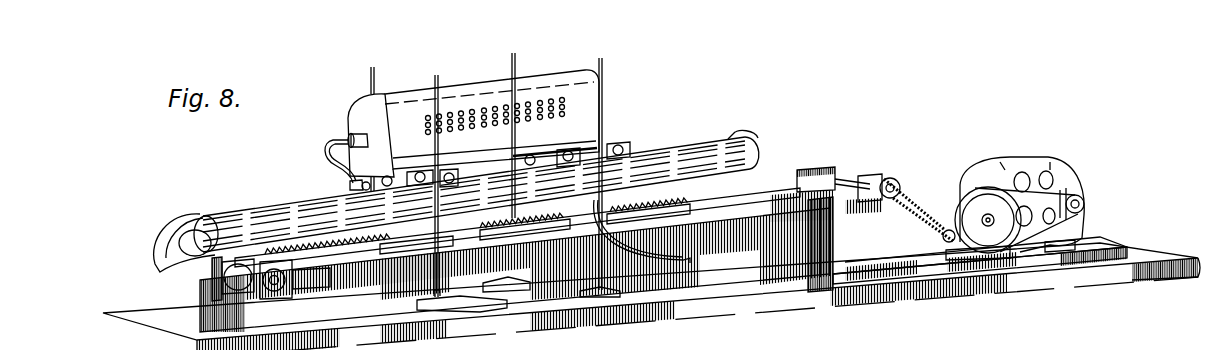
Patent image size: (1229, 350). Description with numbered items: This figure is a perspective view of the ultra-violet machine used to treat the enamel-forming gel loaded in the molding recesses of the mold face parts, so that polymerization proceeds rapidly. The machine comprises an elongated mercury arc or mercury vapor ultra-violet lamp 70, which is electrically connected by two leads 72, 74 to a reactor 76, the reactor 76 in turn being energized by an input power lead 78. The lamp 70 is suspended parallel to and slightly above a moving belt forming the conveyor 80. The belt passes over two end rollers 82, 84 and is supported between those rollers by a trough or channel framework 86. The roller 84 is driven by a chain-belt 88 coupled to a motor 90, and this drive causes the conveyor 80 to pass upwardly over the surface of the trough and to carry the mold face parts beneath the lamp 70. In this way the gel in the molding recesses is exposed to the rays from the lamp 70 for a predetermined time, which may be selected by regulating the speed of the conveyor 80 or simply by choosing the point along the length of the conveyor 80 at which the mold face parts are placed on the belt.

The ultra-violet lamp 70 is at (190, 238).
The lead 72 is at (350, 186).
The lead 74 is at (333, 150).
The reactor 76 is at (541, 98).
The input power lead 78 is at (690, 263).
The conveyor 80 is at (234, 309).
The end roller 82 is at (277, 292).
The end roller 84 is at (891, 178).
The trough or channel framework 86 is at (725, 218).
The chain-belt 88 is at (921, 193).
The motor 90 is at (1057, 170).